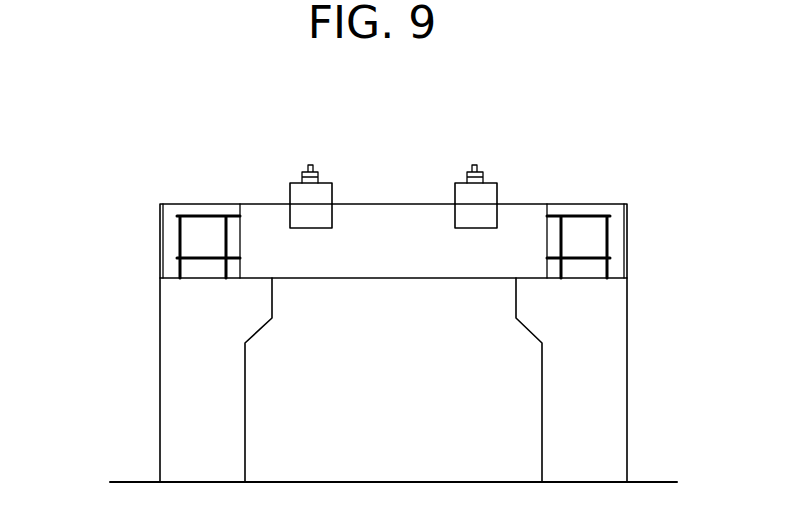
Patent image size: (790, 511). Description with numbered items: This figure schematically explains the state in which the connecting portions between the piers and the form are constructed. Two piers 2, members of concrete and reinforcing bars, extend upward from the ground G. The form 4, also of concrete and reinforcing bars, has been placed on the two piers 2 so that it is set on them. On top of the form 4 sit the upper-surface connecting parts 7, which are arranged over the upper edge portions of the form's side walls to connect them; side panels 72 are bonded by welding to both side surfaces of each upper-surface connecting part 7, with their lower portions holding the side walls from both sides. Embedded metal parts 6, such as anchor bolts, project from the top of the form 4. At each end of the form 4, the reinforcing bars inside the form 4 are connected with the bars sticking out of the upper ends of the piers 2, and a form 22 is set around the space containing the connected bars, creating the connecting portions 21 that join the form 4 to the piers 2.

The pier 2 is at (160, 410).
The form 4 is at (377, 279).
The embedded metal part 6 is at (303, 172).
The upper-surface connecting part 7 is at (389, 163).
The connecting portion 21 is at (183, 200).
The form 22 is at (160, 247).
The side panel 72 is at (298, 213).
The ground G is at (468, 482).